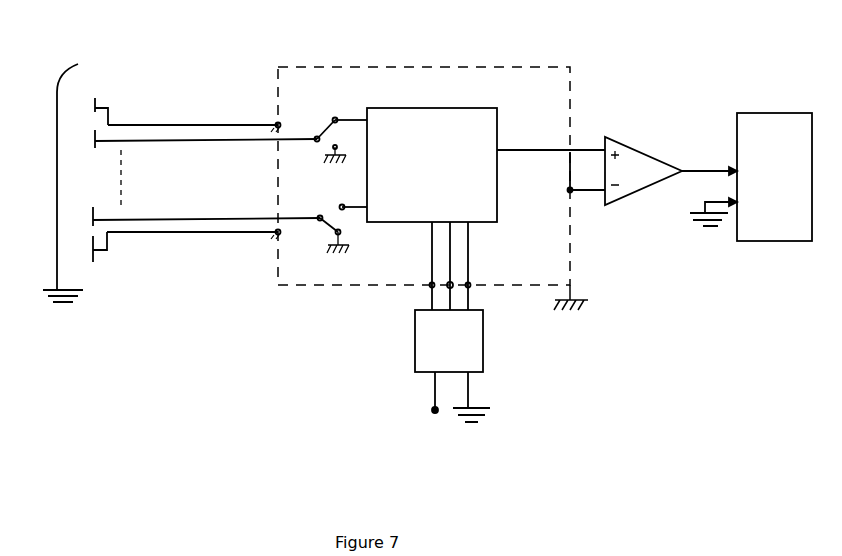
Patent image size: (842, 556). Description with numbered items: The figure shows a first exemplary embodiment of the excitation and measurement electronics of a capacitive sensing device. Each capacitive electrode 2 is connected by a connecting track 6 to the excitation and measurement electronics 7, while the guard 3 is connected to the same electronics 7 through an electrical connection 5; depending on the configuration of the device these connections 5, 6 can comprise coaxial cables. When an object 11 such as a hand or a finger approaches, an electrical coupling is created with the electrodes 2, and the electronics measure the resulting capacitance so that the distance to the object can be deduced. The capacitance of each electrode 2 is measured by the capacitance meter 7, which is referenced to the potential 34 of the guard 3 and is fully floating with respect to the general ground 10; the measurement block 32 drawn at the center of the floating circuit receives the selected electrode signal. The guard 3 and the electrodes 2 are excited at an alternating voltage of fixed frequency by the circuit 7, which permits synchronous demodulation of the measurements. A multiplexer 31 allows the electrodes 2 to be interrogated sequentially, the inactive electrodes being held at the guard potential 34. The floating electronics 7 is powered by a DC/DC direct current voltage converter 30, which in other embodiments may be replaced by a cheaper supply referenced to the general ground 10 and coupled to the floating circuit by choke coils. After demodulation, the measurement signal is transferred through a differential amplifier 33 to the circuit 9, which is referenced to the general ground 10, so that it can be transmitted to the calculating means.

The electrode 2 is at (95, 135).
The guard 3 is at (95, 100).
The electrical connection 5 is at (175, 125).
The connecting track 6 is at (205, 143).
The excitation and measurement electronics 7 is at (540, 100).
The circuit referenced to the general ground 9 is at (747, 113).
The general ground 10 is at (62, 303).
The object 11 is at (78, 64).
The DC/DC converter 30 is at (415, 355).
The multiplexer 31 is at (337, 118).
The measurement block 32 is at (450, 108).
The differential amplifier 33 is at (633, 146).
The guard potential 34 is at (570, 312).